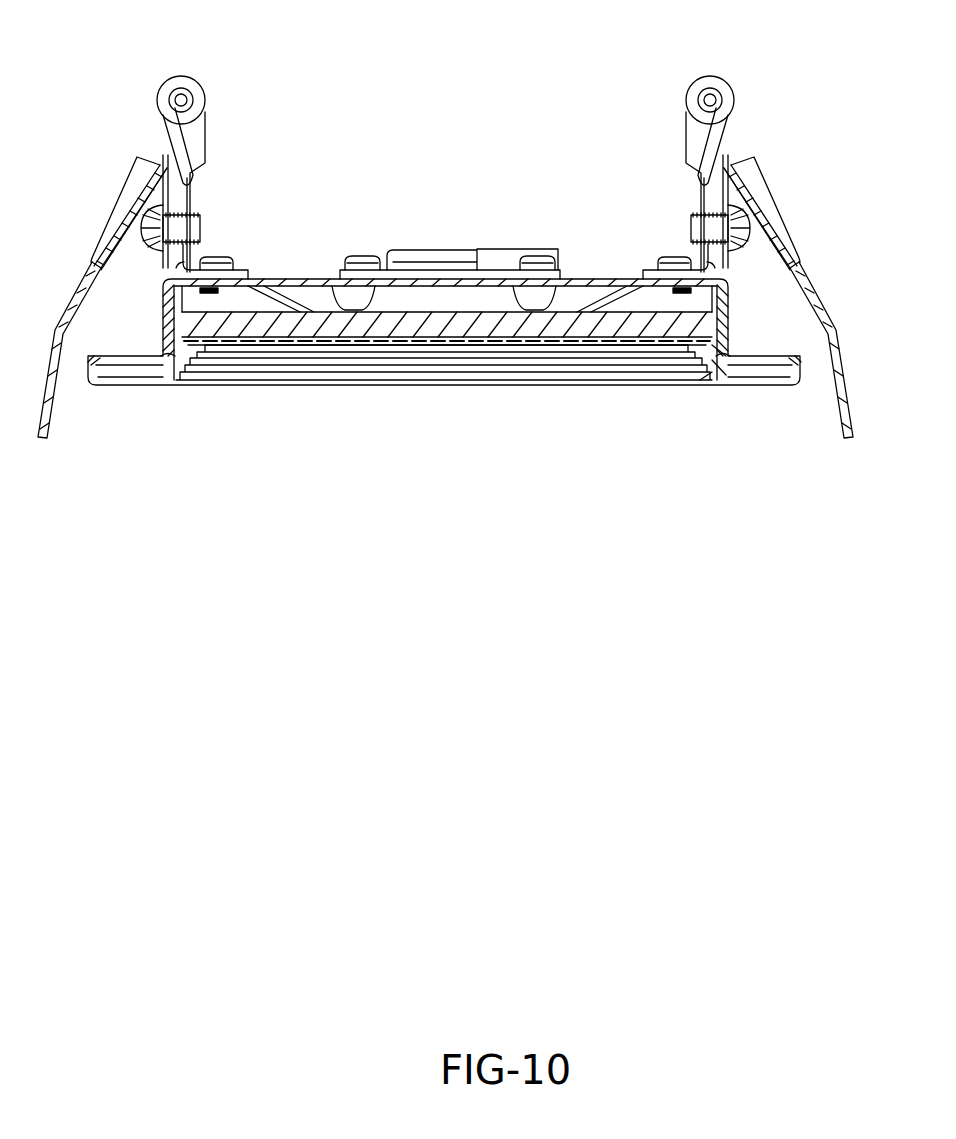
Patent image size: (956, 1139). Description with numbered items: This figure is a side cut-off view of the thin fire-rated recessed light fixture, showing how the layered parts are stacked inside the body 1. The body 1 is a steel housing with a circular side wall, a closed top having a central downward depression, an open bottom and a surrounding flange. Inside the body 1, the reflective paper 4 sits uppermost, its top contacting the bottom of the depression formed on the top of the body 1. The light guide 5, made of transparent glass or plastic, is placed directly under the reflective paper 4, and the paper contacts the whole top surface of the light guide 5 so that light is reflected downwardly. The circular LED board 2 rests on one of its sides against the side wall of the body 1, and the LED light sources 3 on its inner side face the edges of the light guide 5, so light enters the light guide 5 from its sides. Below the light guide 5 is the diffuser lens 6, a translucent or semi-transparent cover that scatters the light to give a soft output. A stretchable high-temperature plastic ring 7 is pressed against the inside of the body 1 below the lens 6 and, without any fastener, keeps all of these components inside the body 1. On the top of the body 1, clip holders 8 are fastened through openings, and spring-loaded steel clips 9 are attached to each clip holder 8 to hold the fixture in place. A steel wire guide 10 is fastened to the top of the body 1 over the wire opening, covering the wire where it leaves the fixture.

The body 1 is at (583, 296).
The LED board 2 is at (726, 286).
The LED light sources 3 is at (713, 327).
The reflective paper 4 is at (254, 308).
The light guide 5 is at (427, 330).
The lens 6 is at (272, 340).
The ring 7 is at (222, 372).
The clip holder 8 is at (235, 255).
The clip 9 is at (157, 152).
The wire guide 10 is at (440, 260).